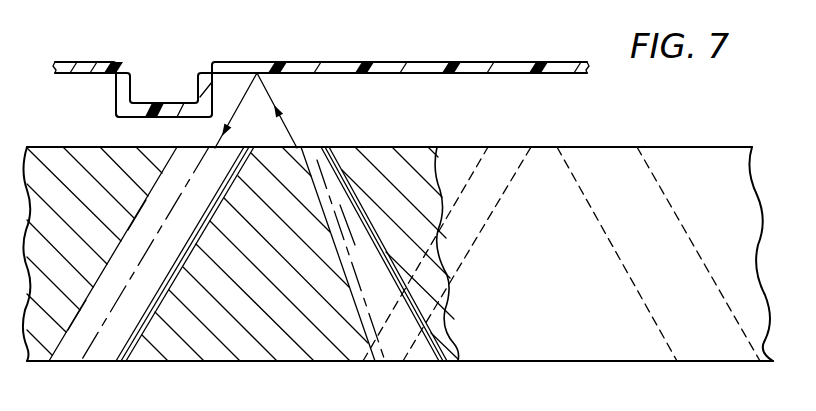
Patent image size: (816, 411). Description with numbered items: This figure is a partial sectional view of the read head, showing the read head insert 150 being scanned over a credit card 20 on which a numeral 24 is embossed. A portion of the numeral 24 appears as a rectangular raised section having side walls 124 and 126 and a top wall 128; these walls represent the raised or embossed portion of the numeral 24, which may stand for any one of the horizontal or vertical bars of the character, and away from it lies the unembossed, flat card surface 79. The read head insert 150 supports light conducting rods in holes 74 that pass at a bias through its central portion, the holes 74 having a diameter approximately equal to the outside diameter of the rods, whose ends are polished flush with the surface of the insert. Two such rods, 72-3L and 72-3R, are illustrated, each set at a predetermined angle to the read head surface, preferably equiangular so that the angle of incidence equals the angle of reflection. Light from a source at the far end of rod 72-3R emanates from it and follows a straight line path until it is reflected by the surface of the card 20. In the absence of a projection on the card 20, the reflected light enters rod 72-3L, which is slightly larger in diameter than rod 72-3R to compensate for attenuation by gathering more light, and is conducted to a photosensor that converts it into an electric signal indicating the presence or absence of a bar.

The credit card 20 is at (401, 63).
The embossed numeral 24 is at (148, 102).
The side wall 126 is at (208, 80).
The side wall 124 is at (120, 87).
The top wall 128 is at (133, 117).
The flat card surface 79 is at (347, 74).
The read head insert 150 is at (283, 361).
The holes 74 is at (58, 341).
The light conducting rod 72-3L is at (160, 285).
The light conducting rod 72-3R is at (390, 219).